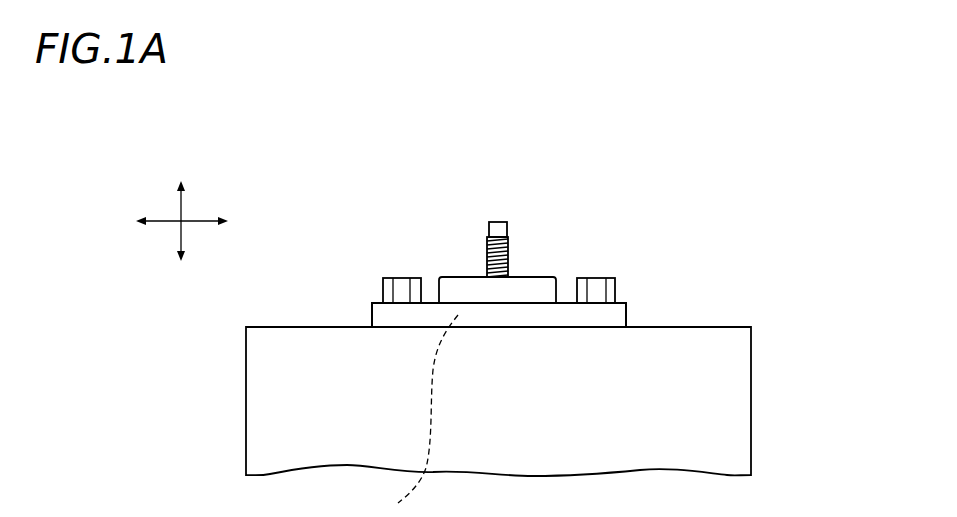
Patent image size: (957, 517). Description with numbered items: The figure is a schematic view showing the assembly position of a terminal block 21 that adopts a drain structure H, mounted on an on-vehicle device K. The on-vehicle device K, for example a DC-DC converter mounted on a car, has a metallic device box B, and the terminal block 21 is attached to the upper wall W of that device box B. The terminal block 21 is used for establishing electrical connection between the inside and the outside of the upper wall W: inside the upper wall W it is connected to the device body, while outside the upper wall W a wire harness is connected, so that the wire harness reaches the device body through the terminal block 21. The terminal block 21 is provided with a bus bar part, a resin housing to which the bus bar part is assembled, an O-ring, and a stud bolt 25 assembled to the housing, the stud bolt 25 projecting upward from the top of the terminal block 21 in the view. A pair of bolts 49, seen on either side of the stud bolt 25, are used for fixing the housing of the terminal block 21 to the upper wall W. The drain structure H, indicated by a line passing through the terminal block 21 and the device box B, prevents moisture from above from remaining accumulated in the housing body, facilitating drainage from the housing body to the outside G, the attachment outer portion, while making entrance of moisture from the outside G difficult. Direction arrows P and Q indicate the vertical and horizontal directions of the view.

The device box B is at (752, 418).
The upper wall W is at (685, 326).
The on-vehicle device K is at (782, 351).
The terminal block 21 is at (572, 228).
The bolts 49 is at (401, 285).
The stud bolt 25 is at (496, 222).
The outside G is at (325, 315).
The drain structure H is at (415, 415).
The vertical direction P is at (180, 205).
The horizontal direction Q is at (170, 222).